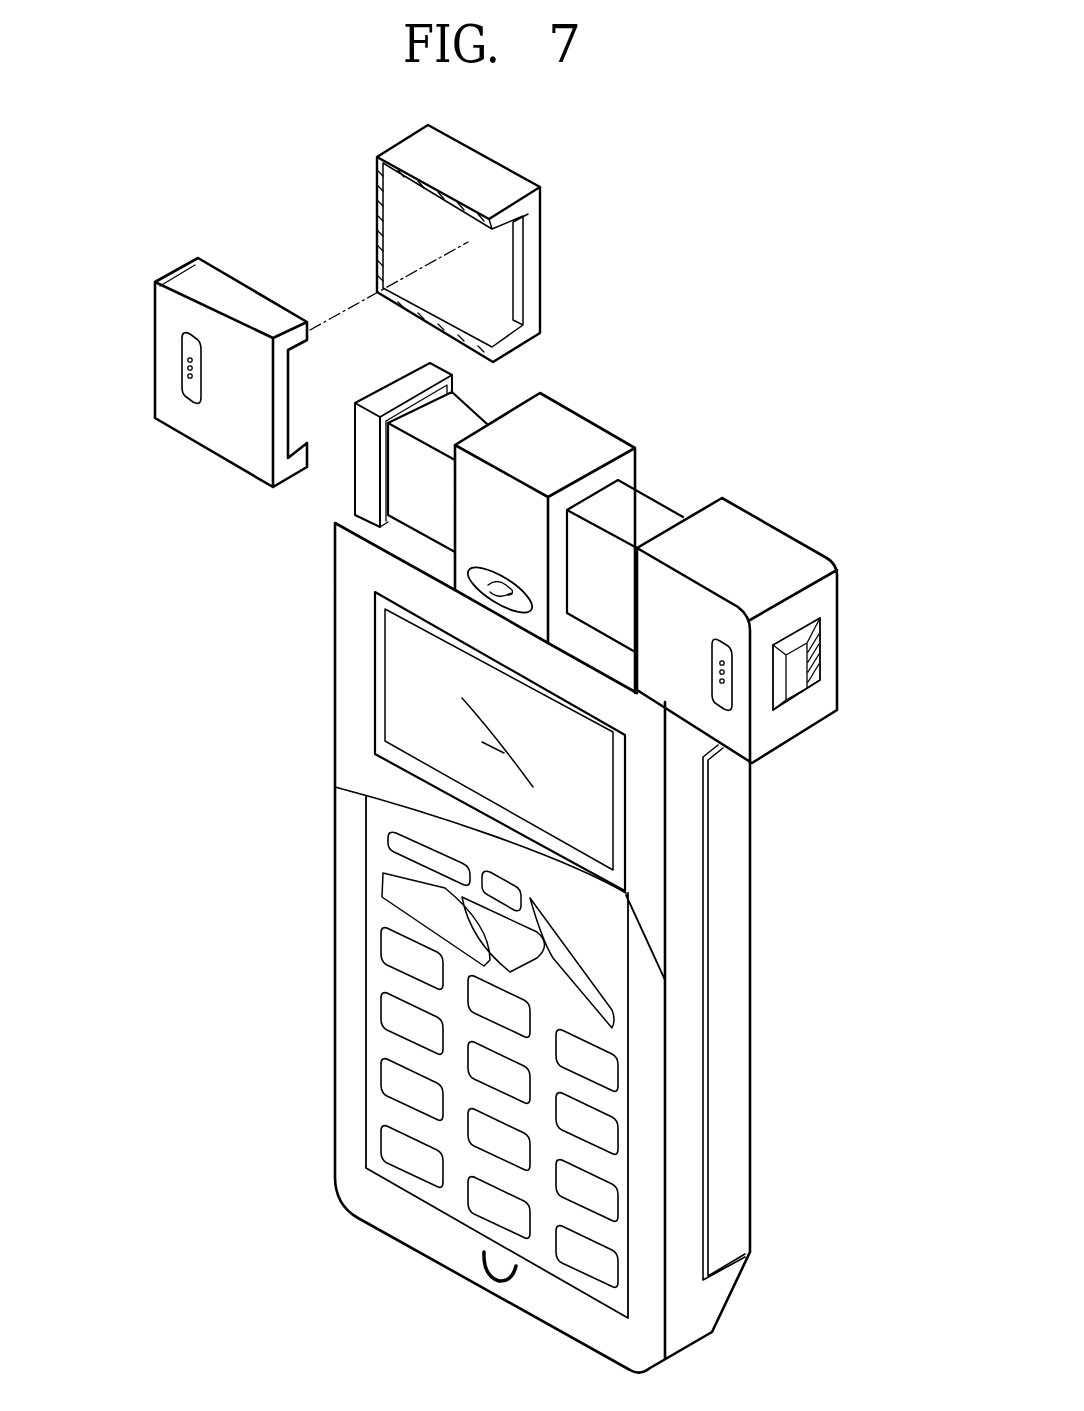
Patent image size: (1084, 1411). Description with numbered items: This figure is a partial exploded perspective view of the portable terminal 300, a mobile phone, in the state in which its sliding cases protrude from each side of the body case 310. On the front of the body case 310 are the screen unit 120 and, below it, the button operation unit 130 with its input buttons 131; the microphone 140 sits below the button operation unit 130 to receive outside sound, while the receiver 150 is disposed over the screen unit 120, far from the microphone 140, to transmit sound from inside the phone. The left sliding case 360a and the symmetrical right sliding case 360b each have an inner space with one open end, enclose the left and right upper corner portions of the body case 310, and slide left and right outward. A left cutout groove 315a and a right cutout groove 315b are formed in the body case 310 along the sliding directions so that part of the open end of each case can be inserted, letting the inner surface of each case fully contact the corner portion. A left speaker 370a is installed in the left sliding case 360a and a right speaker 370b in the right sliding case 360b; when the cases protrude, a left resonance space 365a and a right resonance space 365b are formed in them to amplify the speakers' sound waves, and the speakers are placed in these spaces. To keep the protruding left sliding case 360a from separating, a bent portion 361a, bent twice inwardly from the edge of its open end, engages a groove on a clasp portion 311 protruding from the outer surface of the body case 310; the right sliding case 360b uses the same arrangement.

The portable terminal 300 is at (760, 423).
The body case 310 is at (688, 862).
The clasp portion 311 is at (363, 483).
The left cutout groove 315a is at (402, 540).
The right cutout groove 315b is at (603, 640).
The screen unit 120 is at (419, 698).
The button operation unit 130 is at (345, 975).
The input buttons 131 is at (397, 883).
The microphone 140 is at (493, 1281).
The receiver 150 is at (480, 596).
The left sliding case 360a is at (245, 297).
The right sliding case 360b is at (753, 548).
The bent portion 361a is at (472, 197).
The left resonance space 365a is at (508, 278).
The right resonance space 365b is at (802, 658).
The left speaker 370a is at (175, 384).
The right speaker 370b is at (731, 703).